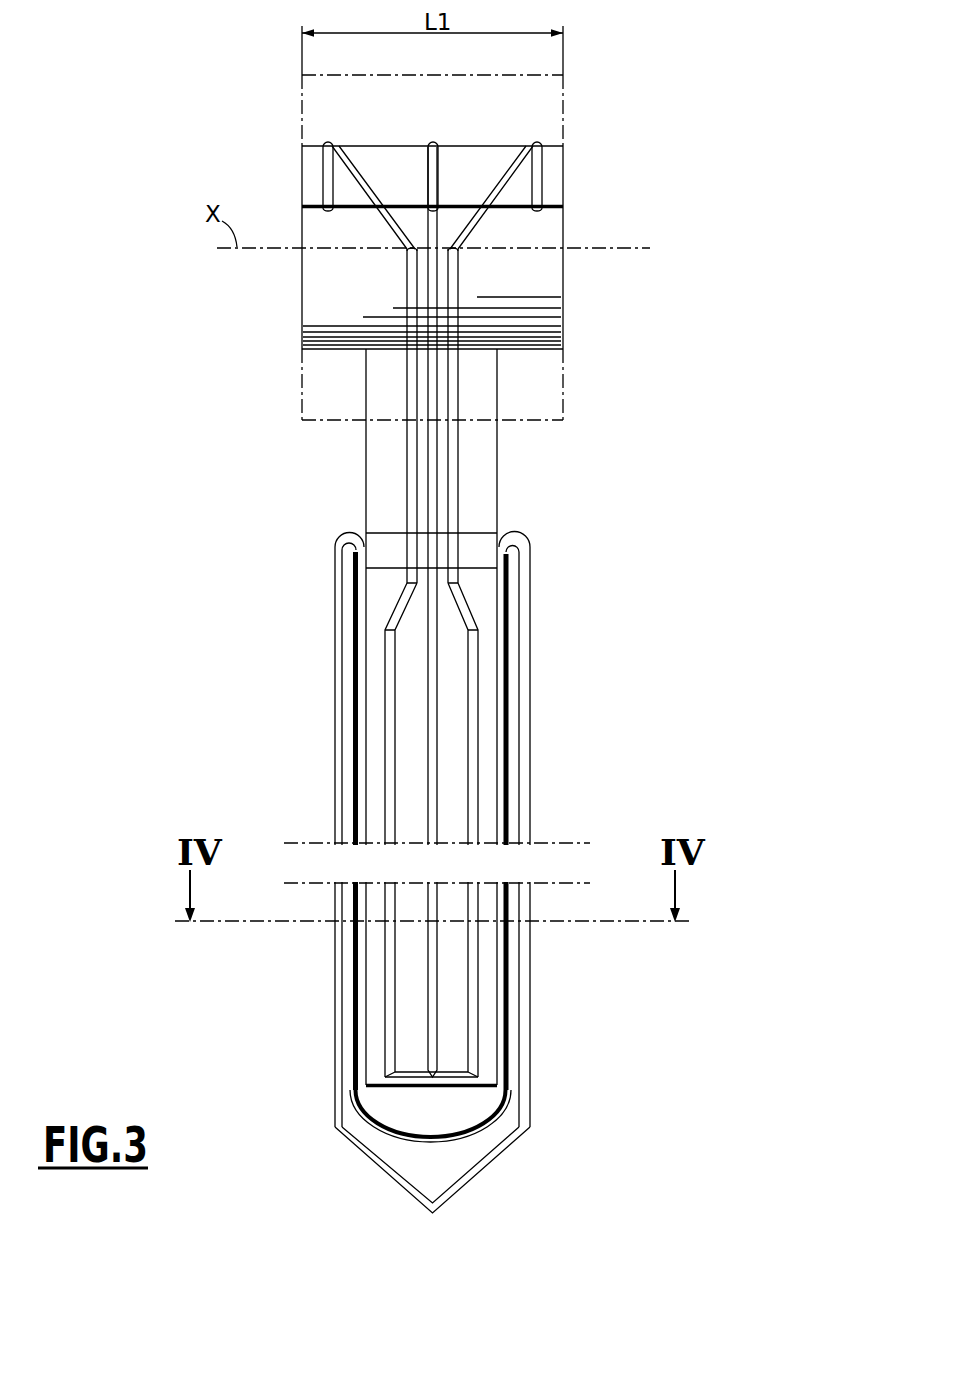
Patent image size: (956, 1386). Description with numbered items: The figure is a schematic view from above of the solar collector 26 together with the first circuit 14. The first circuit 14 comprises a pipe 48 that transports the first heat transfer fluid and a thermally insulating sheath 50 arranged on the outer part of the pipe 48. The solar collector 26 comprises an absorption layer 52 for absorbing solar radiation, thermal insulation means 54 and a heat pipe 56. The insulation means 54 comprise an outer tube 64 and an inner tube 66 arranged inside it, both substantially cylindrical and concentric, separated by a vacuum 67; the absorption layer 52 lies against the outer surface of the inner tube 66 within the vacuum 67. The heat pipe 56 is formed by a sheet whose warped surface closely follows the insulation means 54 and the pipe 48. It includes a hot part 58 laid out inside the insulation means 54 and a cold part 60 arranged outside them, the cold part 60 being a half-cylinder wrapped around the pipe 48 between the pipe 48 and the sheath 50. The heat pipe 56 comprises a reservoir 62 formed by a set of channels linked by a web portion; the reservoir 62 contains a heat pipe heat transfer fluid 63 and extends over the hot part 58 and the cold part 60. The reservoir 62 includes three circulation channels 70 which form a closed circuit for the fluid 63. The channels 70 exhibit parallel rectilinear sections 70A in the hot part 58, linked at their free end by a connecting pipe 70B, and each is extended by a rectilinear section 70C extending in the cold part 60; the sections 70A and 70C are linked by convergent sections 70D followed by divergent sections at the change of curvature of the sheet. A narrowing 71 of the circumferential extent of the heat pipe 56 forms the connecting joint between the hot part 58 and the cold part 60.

The first circuit 14 is at (647, 218).
The solar collector 26 is at (642, 832).
The pipe 48 is at (568, 346).
The thermally insulating sheath 50 is at (563, 121).
The absorption layer 52 is at (353, 1068).
The thermal insulation means 54 is at (600, 978).
The heat pipe 56 is at (512, 805).
The hot part 58 is at (452, 1038).
The cold part 60 is at (525, 293).
The reservoir 62 is at (480, 712).
The heat pipe heat transfer fluid 63 is at (383, 723).
The outer tube 64 is at (523, 944).
The inner tube 66 is at (358, 947).
The vacuum 67 is at (512, 970).
The circulation channels 70 is at (432, 178).
The parallel rectilinear sections 70A is at (390, 995).
The connecting pipe 70B is at (461, 1077).
The rectilinear section 70C is at (540, 191).
The convergent sections 70D is at (412, 294).
The narrowing 71 is at (467, 274).